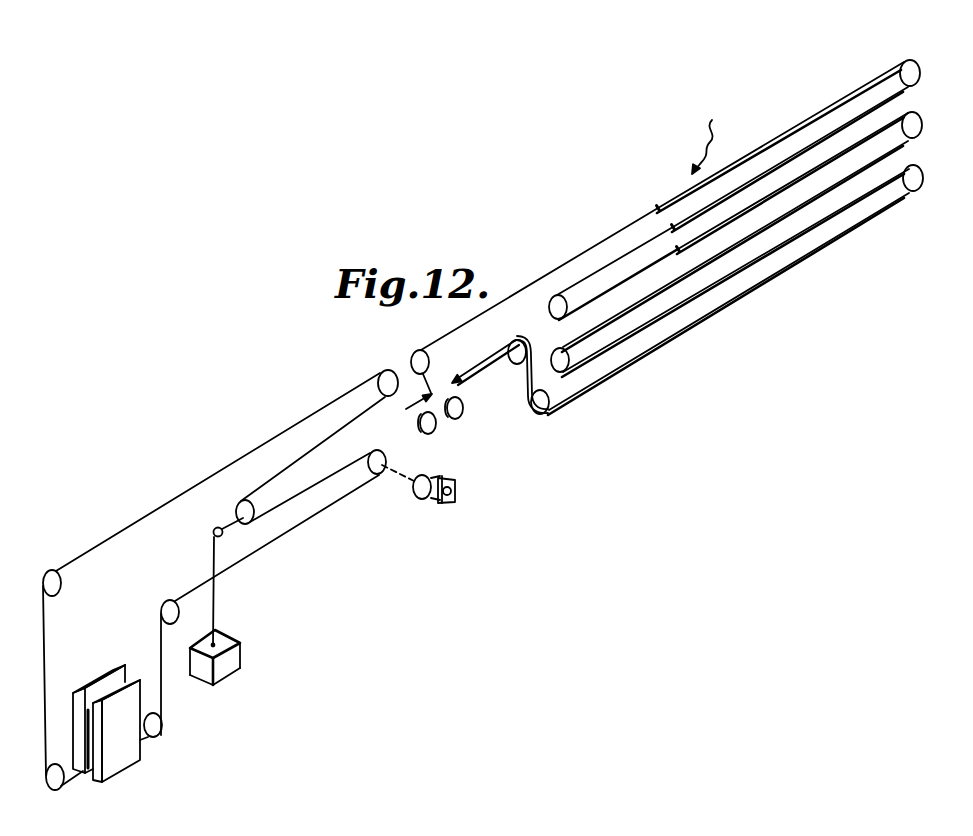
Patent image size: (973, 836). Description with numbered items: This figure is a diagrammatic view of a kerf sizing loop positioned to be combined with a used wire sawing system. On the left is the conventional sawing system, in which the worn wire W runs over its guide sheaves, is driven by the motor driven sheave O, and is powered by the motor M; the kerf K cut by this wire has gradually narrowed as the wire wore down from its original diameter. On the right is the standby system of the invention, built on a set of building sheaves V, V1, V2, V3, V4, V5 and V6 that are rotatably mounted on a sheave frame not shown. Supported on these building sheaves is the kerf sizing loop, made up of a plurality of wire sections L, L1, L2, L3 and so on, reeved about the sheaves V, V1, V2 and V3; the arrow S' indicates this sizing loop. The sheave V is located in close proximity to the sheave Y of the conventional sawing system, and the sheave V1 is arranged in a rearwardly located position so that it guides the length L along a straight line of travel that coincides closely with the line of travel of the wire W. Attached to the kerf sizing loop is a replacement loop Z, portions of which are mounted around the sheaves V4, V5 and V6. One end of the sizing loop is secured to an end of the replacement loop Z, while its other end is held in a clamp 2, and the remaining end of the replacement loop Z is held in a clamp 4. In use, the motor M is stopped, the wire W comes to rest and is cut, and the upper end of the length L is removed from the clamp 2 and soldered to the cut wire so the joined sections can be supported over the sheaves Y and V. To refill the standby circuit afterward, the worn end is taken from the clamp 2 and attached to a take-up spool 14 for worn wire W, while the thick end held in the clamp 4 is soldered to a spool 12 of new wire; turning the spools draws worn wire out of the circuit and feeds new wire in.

The wire W is at (209, 478).
The sheave Y is at (382, 375).
The building sheave V is at (417, 357).
The building sheave V1 is at (907, 68).
The building sheave V2 is at (549, 307).
The building sheave V3 is at (916, 125).
The building sheave V4 is at (563, 350).
The building sheave V5 is at (918, 191).
The building sheave V6 is at (544, 416).
The section of wire L is at (557, 267).
The section of wire L1 is at (745, 155).
The section of wire L2 is at (607, 266).
The section of wire L3 is at (893, 121).
The replacement loop Z is at (897, 157).
The direction of travel S' is at (709, 140).
The kerf K is at (86, 769).
The motor driven sheave O is at (416, 499).
The motor M is at (455, 498).
The clamp 2 is at (411, 411).
The clamp 4 is at (465, 381).
The spool of new wire 12 is at (464, 410).
The take-up spool 14 is at (428, 434).